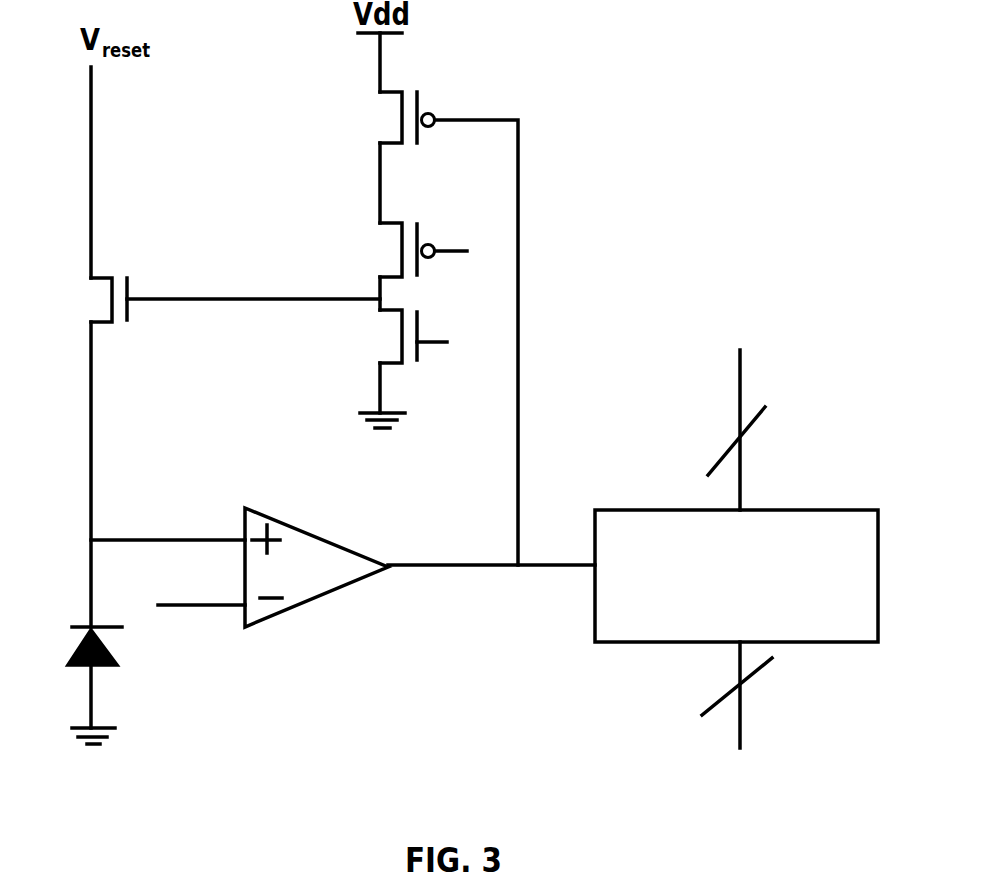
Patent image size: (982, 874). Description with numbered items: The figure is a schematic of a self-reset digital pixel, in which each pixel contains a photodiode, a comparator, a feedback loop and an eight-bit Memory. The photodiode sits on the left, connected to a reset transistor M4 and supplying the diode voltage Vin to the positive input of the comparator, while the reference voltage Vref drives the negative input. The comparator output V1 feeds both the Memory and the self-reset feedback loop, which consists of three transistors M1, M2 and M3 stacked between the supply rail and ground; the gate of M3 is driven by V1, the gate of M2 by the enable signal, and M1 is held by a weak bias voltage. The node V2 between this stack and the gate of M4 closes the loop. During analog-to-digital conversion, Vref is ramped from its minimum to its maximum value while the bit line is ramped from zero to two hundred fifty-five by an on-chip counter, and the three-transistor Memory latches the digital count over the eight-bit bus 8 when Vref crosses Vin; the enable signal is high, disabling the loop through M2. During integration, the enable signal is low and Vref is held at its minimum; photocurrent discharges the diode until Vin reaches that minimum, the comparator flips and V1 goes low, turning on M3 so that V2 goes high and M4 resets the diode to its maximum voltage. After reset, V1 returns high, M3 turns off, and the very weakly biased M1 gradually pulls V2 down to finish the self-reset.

The 8-bit bus 8 is at (738, 527).
The transistor M1 is at (424, 336).
The transistor M2 is at (425, 252).
The transistor M3 is at (386, 117).
The reset transistor M4 is at (85, 300).
The comparator output V1 is at (491, 545).
The node V2 is at (253, 280).
The diode voltage Vin is at (168, 519).
The reference voltage Vref is at (197, 584).
The memory Memory is at (736, 576).